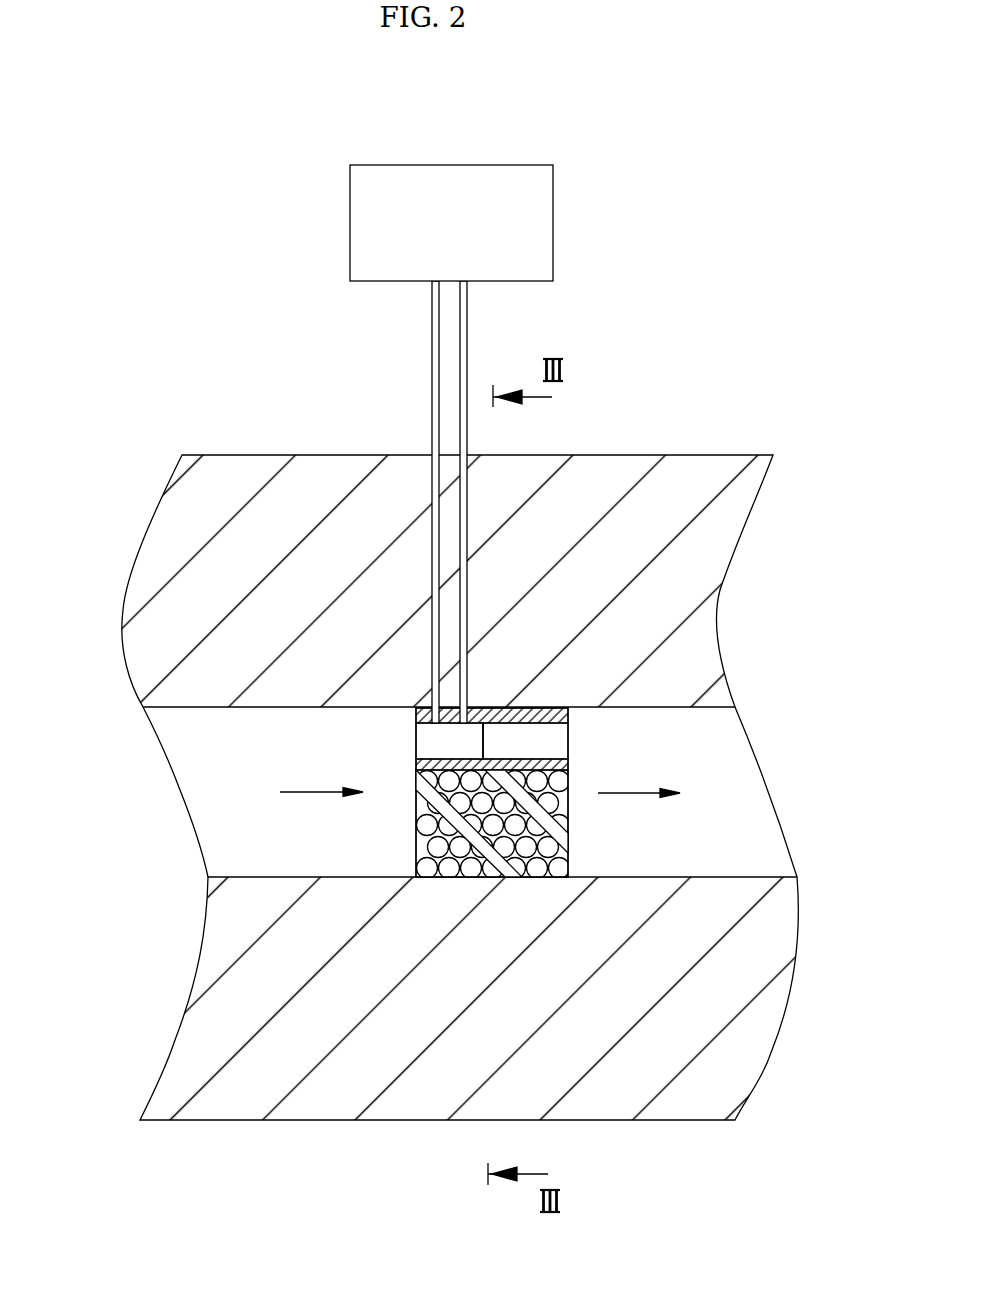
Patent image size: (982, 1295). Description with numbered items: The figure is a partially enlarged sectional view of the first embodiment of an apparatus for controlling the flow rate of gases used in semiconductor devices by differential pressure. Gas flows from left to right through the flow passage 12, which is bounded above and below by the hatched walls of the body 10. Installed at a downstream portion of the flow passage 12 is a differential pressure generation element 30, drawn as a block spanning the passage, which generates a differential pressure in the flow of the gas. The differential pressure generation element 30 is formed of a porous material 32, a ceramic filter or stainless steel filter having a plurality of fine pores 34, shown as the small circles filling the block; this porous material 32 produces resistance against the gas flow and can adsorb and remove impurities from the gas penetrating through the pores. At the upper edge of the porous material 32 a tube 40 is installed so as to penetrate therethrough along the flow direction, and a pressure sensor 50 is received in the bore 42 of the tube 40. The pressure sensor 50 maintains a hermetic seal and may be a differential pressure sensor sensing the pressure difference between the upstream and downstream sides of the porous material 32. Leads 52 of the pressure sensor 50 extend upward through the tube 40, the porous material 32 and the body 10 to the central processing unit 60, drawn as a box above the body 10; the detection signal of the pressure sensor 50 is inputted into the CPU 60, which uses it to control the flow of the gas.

The body 10 is at (247, 1083).
The flow passage 12 is at (220, 802).
The differential pressure generation element 30 is at (490, 786).
The porous material 32 is at (422, 833).
The fine pores 34 is at (528, 855).
The tube 40 is at (520, 718).
The bore 42 is at (553, 737).
The pressure sensor 50 is at (427, 733).
The leads 52 is at (435, 362).
The central processing unit (CPU) 60 is at (518, 165).